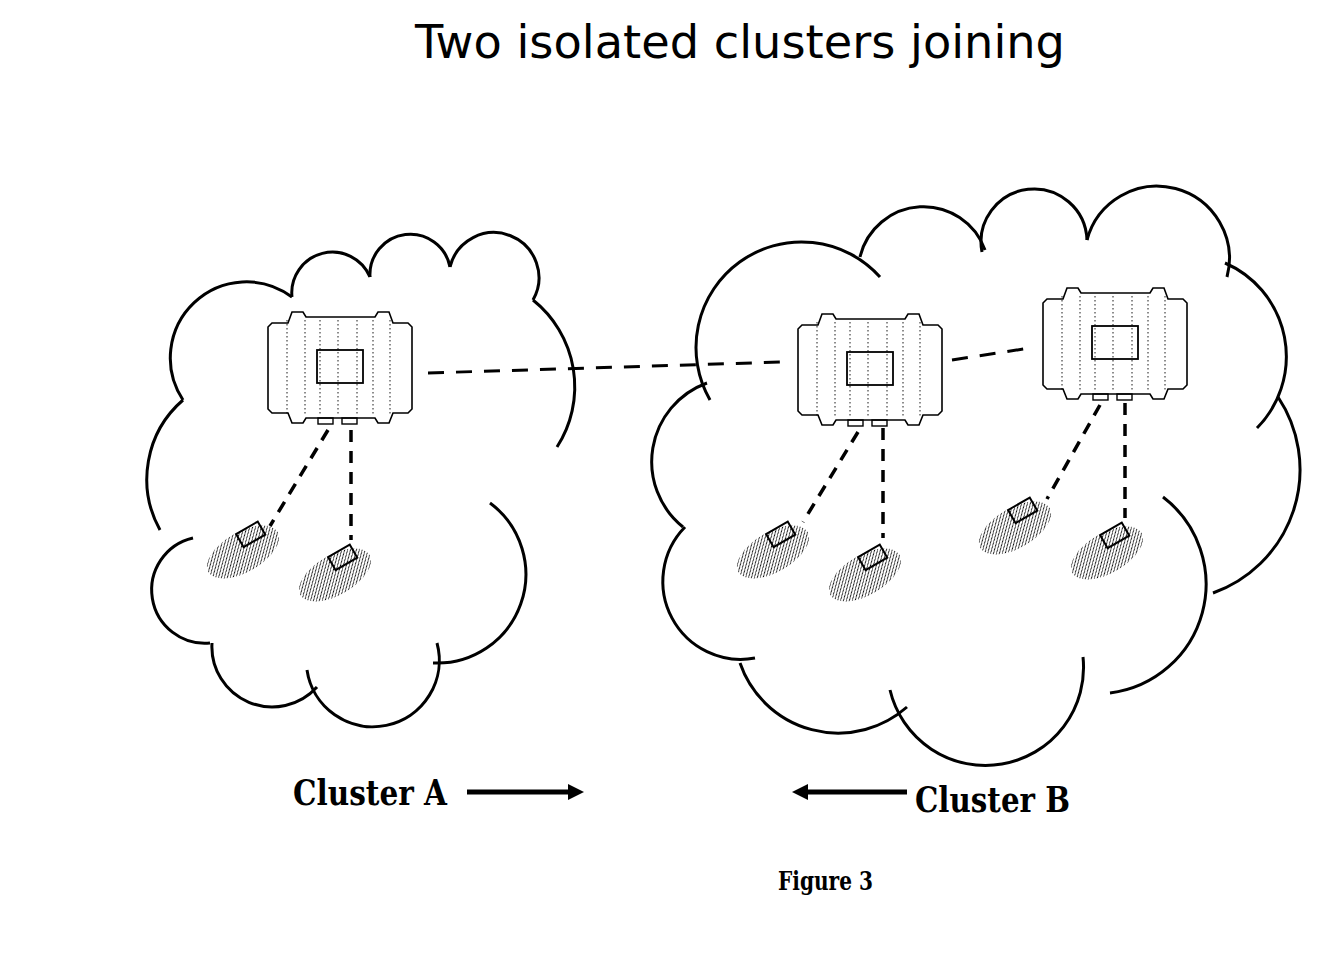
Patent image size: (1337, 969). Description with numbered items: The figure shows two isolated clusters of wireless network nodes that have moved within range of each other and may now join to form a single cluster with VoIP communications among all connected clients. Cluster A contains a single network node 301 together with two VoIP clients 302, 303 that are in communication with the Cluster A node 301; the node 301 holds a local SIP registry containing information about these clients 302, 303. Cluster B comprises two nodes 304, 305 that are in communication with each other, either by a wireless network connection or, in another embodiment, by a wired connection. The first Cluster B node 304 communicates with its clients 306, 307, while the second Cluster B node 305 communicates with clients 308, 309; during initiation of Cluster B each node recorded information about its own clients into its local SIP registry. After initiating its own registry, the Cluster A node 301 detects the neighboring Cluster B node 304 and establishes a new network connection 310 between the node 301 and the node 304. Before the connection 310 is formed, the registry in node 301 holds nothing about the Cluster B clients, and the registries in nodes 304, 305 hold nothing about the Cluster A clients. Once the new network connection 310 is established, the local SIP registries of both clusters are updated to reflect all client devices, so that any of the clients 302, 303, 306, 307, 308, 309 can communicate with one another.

The Cluster A network node 301 is at (333, 298).
The VoIP client 302 is at (243, 522).
The VoIP client 303 is at (353, 600).
The first Cluster B node 304 is at (840, 297).
The second Cluster B node 305 is at (1095, 283).
The client 306 is at (780, 525).
The client 307 is at (870, 600).
The client 308 is at (1010, 553).
The client 309 is at (1113, 570).
The new network connection 310 is at (668, 358).